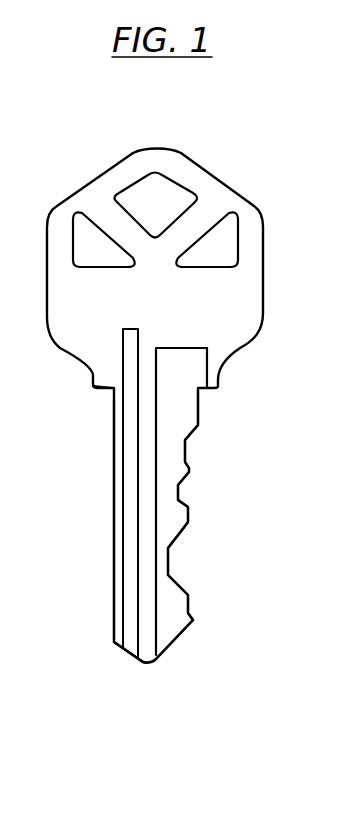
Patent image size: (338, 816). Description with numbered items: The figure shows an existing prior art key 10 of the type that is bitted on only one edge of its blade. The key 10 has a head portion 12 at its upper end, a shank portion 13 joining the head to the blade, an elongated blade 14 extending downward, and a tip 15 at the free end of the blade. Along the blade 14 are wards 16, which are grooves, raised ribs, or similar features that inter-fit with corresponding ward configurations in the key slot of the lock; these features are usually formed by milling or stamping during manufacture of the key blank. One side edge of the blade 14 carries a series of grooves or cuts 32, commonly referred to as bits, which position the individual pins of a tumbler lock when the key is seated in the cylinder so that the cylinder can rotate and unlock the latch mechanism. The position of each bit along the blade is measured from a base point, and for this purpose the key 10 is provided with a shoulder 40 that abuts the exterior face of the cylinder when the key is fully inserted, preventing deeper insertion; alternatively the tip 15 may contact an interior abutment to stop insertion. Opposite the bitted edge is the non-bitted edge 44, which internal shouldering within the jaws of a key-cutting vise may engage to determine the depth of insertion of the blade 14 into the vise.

The key 10 is at (209, 160).
The head portion 12 is at (258, 283).
The shank portion 13 is at (218, 382).
The blade 14 is at (173, 490).
The tip 15 is at (145, 664).
The wards 16 is at (135, 560).
The bits 32 is at (182, 507).
The shoulder 40 is at (108, 390).
The non-bitted edge 44 is at (113, 508).